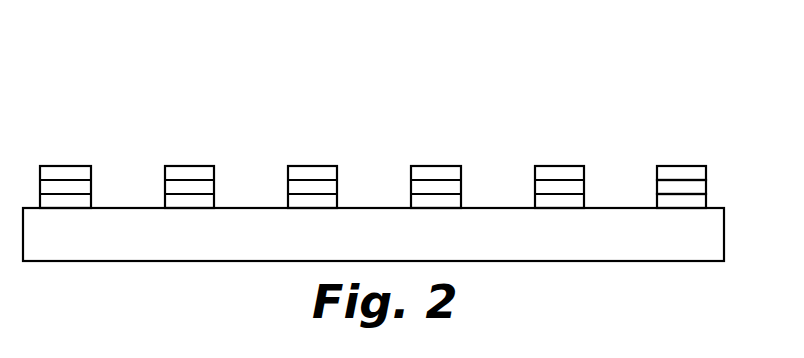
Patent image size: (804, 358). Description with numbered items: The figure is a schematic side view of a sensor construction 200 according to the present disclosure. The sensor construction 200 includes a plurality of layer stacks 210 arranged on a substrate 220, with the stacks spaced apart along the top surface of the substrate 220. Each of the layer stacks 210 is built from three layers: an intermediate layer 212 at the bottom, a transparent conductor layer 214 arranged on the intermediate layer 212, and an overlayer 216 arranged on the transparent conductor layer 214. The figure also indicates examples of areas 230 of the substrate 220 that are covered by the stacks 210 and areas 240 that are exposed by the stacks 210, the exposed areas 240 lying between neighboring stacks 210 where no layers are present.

The sensor construction 200 is at (534, 85).
The layer stacks 210 is at (686, 151).
The intermediate layer 212 is at (667, 205).
The transparent conductor layer 214 is at (668, 185).
The overlayer 216 is at (698, 172).
The substrate 220 is at (692, 233).
The areas covered by the stacks 230 is at (165, 160).
The areas exposed by the stacks 240 is at (214, 160).